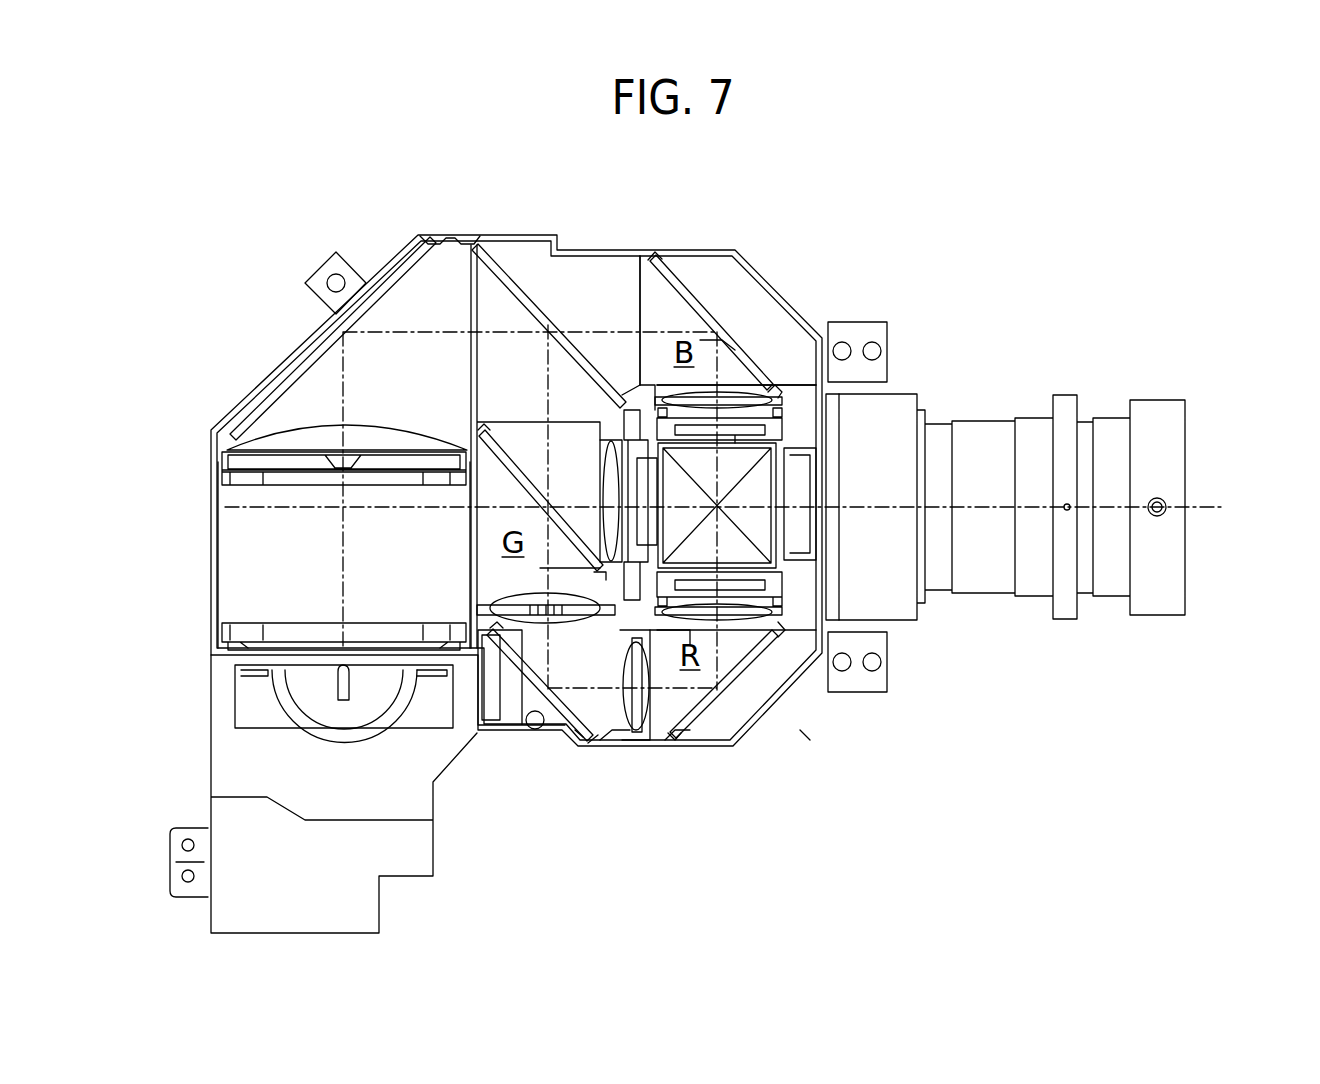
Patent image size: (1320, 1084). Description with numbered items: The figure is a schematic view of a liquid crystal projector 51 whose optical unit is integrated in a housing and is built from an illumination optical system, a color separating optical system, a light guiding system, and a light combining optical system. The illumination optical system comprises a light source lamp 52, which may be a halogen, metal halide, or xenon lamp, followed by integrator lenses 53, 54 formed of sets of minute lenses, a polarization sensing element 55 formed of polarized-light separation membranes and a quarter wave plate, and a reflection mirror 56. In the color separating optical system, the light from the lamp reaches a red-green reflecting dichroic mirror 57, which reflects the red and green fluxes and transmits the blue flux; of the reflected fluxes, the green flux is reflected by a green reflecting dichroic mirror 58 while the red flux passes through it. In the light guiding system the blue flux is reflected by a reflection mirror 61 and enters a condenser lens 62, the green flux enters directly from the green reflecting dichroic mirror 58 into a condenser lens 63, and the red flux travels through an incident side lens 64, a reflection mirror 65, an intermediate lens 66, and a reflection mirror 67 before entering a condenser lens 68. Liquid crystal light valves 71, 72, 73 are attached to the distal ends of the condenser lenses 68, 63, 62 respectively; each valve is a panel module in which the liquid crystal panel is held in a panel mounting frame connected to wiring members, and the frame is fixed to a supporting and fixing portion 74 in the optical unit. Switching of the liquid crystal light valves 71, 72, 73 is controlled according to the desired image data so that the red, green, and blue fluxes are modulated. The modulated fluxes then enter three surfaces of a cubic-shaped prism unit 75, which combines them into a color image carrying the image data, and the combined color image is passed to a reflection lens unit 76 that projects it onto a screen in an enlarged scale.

The liquid crystal projector 51 is at (1024, 250).
The light source lamp 52 is at (240, 705).
The integrator lens 53 is at (288, 633).
The integrator lens 54 is at (278, 476).
The polarization sensing element 55 is at (235, 453).
The reflection mirror 56 is at (336, 348).
The red-green reflecting dichroic mirror 57 is at (513, 277).
The green reflecting dichroic mirror 58 is at (480, 505).
The reflection mirror 61 is at (737, 330).
The condenser lens 62 is at (720, 338).
The condenser lens 63 is at (603, 455).
The incident side lens 64 is at (518, 620).
The reflection mirror 65 is at (570, 715).
The intermediate lens 66 is at (625, 700).
The reflection mirror 67 is at (712, 700).
The condenser lens 68 is at (770, 612).
The liquid crystal light valve 71 is at (745, 620).
The liquid crystal light valve 72 is at (630, 400).
The liquid crystal light valve 73 is at (790, 430).
The supporting and fixing portion 74 is at (657, 625).
The prism unit 75 is at (775, 525).
The reflection lens unit 76 is at (1155, 615).